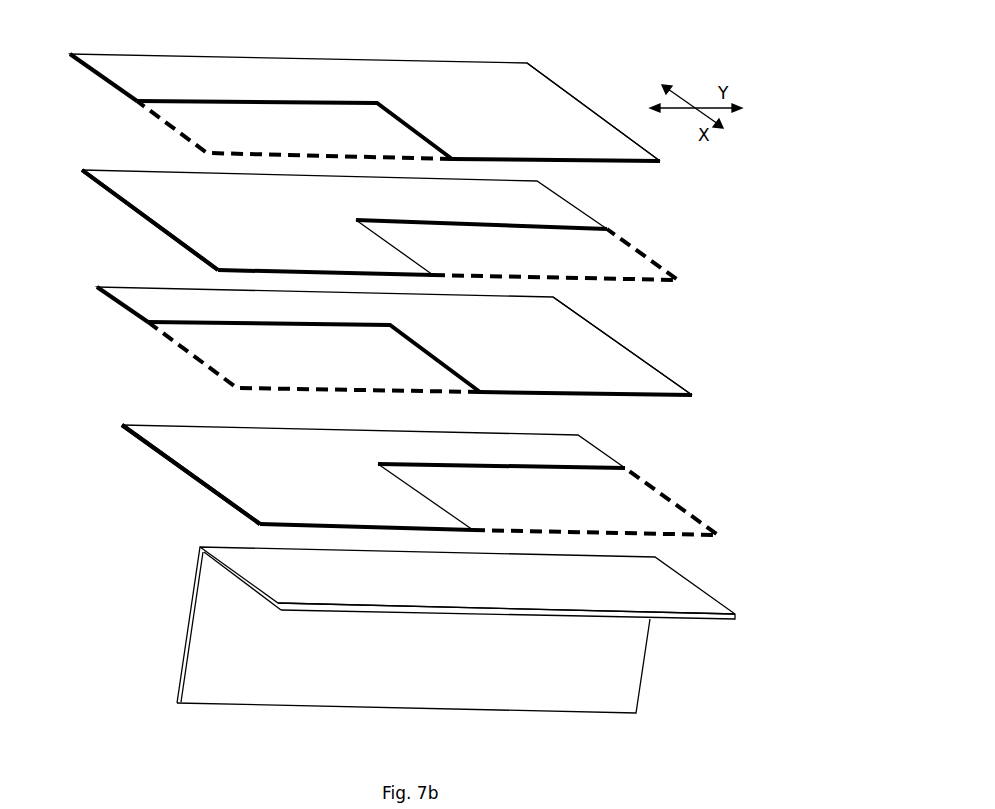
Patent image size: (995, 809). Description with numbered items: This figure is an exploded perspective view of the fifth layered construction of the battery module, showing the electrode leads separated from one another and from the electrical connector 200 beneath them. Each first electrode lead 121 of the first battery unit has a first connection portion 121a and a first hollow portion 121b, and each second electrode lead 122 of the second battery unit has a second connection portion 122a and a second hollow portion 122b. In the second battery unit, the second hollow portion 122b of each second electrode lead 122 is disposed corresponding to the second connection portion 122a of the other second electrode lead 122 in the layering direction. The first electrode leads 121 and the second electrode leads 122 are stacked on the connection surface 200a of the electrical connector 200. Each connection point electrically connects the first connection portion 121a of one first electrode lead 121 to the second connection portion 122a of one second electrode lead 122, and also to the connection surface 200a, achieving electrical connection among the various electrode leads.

The first electrode lead 121 is at (369, 147).
The first connection portion 121a is at (516, 133).
The first hollow portion 121b is at (272, 127).
The second electrode lead 122 is at (391, 411).
The second connection portion 122a is at (553, 362).
The second hollow portion 122b is at (262, 363).
The electrical connector 200 is at (448, 628).
The connection surface 200a is at (692, 596).